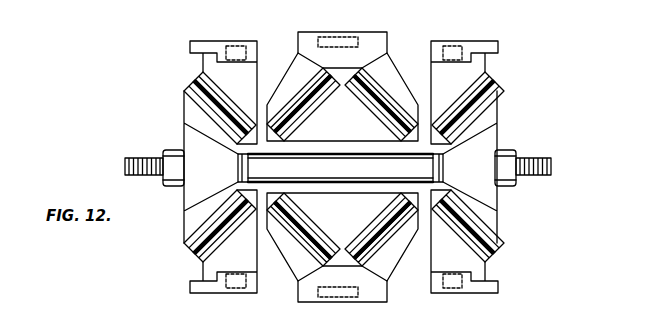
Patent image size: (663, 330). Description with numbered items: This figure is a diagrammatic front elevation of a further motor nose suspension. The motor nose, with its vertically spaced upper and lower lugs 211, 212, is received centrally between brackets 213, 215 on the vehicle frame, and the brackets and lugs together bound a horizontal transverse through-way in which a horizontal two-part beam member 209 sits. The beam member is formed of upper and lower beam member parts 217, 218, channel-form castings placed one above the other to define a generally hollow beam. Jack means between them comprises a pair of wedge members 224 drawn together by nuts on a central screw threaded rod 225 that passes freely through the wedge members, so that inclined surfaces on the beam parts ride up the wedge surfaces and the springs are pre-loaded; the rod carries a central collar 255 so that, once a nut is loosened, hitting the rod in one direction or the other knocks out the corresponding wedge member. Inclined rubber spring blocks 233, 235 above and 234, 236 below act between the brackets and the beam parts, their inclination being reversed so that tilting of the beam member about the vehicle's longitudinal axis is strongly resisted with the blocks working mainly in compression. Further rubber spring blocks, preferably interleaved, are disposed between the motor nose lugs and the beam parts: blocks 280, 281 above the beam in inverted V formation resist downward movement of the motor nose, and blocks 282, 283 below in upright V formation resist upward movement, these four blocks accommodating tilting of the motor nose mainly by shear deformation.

The bracket 213 is at (191, 43).
The spring block 233 is at (186, 89).
The beam member part 217 is at (183, 167).
The screw threaded rod 225 is at (147, 157).
The wedge member 224 is at (201, 182).
The spring block 234 is at (191, 250).
The upper lug 211 is at (378, 44).
The beam member 209 is at (359, 131).
The further rubber spring block 280 is at (310, 88).
The further rubber spring block 281 is at (378, 84).
The bracket 215 is at (488, 44).
The spring block 235 is at (486, 82).
The spring block 236 is at (487, 251).
The central collar 255 is at (315, 171).
The beam member part 218 is at (352, 232).
The lower lug 212 is at (378, 291).
The further rubber spring block 282 is at (308, 252).
The further rubber spring block 283 is at (394, 230).